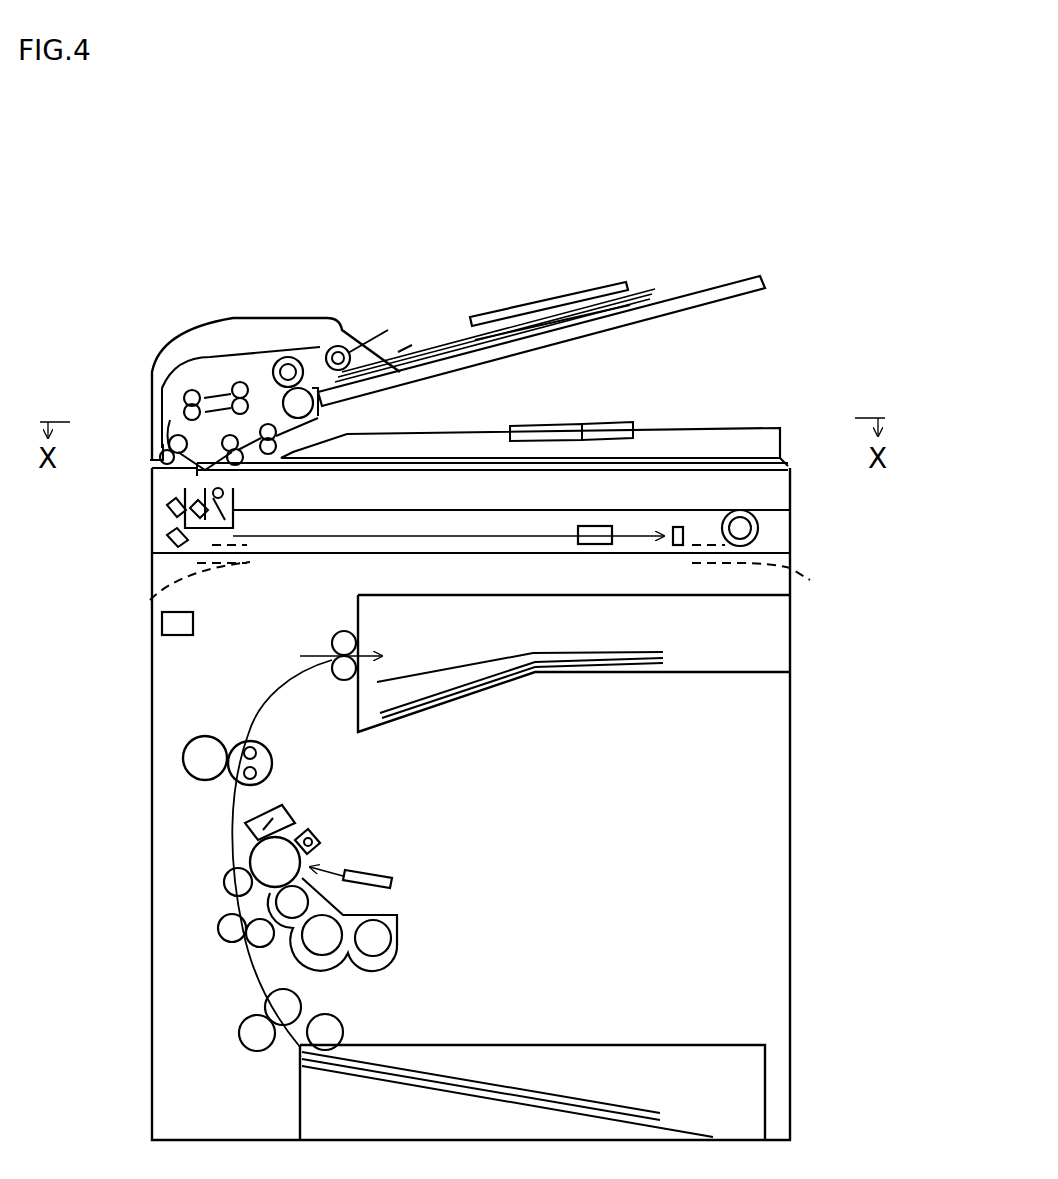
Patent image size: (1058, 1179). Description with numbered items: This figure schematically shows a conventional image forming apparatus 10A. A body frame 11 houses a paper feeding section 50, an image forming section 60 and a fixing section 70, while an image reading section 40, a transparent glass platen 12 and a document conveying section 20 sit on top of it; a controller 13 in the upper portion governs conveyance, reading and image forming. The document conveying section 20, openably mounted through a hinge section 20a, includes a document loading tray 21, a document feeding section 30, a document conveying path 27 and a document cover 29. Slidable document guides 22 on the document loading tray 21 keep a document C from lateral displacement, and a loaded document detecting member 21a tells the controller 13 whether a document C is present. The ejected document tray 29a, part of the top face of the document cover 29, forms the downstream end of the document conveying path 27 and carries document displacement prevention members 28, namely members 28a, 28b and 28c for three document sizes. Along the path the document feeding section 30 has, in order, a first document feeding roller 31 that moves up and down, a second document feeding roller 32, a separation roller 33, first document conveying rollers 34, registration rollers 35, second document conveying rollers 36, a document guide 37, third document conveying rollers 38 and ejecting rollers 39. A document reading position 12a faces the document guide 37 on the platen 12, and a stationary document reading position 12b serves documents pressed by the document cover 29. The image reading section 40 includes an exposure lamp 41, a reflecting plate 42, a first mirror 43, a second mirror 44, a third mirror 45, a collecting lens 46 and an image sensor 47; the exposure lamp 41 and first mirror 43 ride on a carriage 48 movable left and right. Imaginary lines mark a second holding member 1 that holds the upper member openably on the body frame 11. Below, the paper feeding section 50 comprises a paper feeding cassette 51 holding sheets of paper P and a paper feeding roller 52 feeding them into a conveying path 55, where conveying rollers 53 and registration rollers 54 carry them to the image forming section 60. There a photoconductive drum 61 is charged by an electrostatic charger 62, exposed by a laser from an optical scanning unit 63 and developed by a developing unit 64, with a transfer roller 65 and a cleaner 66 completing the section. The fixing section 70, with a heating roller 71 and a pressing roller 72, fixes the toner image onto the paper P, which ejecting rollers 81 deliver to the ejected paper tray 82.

The image forming apparatus 10A is at (160, 210).
The body frame 11 is at (810, 700).
The platen 12 is at (795, 472).
The document reading position 12a is at (163, 455).
The stationary document reading position 12b is at (720, 462).
The controller 13 is at (160, 622).
The document conveying section 20 is at (575, 344).
The hinge section 20a is at (790, 466).
The document loading tray 21 is at (693, 290).
The loaded document detecting member 21a is at (392, 346).
The document guides 22 is at (565, 292).
The document C is at (500, 328).
The document conveying path 27 is at (210, 392).
The document displacement prevention members 28 is at (600, 395).
The document displacement prevention member for A3 size 28a is at (592, 423).
The document displacement prevention member for A4 size 28b is at (545, 424).
The document displacement prevention member for A5 size 28c is at (490, 430).
The document cover 29 is at (784, 432).
The ejected document tray 29a is at (415, 440).
The document feeding section 30 is at (245, 368).
The first document feeding roller 31 is at (370, 335).
The second document feeding roller 32 is at (280, 358).
The separation roller 33 is at (340, 346).
The conveying rollers 34 is at (238, 382).
The registration rollers 35 is at (184, 390).
The second document conveying rollers 36 is at (167, 452).
The document guide 37 is at (196, 478).
The third document conveying rollers 38 is at (240, 462).
The ejecting rollers 39 is at (278, 432).
The image reading section 40 is at (800, 510).
The exposure lamp 41 is at (233, 510).
The reflecting plate 42 is at (220, 500).
The first mirror 43 is at (197, 565).
The second mirror 44 is at (190, 512).
The third mirror 45 is at (170, 540).
The collecting lens 46 is at (592, 546).
The image sensor 47 is at (678, 547).
The carriage 48 is at (170, 502).
The second holding member 1 is at (479, 576).
The paper feeding section 50 is at (491, 1054).
The paper feeding cassette 51 is at (505, 1044).
The paper feeding roller 52 is at (330, 1016).
The conveying rollers 53 is at (255, 1052).
The registration rollers 54 is at (220, 926).
The conveying path 55 is at (245, 972).
The image forming section 60 is at (316, 876).
The photoconductive drum 61 is at (290, 842).
The electrostatic charger 62 is at (318, 835).
The optical scanning unit 63 is at (392, 877).
The developing unit 64 is at (397, 918).
The transfer roller 65 is at (228, 876).
The cleaner 66 is at (248, 830).
The fixing section 70 is at (263, 739).
The heating roller 71 is at (258, 742).
The pressing roller 72 is at (205, 736).
The ejecting rollers 81 is at (332, 640).
The ejected paper tray 82 is at (450, 690).
The sheet of paper P is at (510, 658).